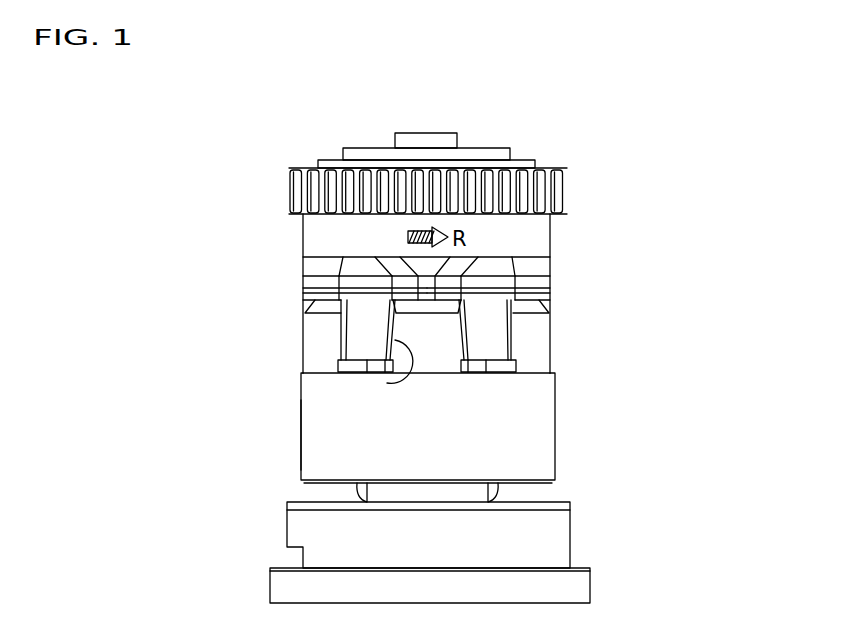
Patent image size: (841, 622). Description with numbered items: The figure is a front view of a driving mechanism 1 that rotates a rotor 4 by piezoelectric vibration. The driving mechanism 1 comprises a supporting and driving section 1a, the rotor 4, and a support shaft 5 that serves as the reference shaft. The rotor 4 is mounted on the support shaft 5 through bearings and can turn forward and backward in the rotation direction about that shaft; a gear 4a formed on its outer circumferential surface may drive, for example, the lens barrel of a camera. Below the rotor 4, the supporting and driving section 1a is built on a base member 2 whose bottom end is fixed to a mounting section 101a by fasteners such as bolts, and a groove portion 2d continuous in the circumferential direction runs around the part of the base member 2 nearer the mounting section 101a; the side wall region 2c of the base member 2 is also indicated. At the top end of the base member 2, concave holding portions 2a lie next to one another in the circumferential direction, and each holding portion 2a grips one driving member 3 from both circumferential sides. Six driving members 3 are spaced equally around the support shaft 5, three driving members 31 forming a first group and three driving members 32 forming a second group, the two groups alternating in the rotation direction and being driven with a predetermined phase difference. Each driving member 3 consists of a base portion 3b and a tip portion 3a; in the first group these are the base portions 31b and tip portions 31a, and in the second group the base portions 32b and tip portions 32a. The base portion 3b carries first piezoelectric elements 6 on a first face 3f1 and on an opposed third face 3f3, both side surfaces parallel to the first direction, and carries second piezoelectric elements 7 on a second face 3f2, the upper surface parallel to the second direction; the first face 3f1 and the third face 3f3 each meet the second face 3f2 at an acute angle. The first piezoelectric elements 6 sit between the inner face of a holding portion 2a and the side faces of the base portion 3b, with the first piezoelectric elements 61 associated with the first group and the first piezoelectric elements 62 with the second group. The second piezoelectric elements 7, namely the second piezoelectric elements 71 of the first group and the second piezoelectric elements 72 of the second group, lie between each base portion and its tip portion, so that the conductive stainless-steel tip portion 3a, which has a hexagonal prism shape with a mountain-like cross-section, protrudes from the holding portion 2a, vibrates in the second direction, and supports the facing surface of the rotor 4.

The driving mechanism 1 is at (475, 226).
The supporting and driving section 1a is at (565, 319).
The base member 2 is at (417, 430).
The holding portion 2a is at (353, 360).
The housing side wall 2c is at (301, 432).
The groove portion 2d is at (296, 495).
The driving member 3 is at (427, 249).
The driving member of the first group 31 is at (160, 199).
The driving member of the second group 32 is at (690, 186).
The tip portion 3a is at (425, 235).
The tip portion of the first-group driving member 31a is at (367, 271).
The tip portion of the second-group driving member 32a is at (493, 272).
The base portion 3b is at (425, 269).
The base portion of the first-group driving member 31b is at (363, 306).
The base portion of the second-group driving member 32b is at (490, 306).
The first face 3f1 is at (345, 334).
The second face 3f2 is at (338, 272).
The third face 3f3 is at (387, 383).
The rotor 4 is at (377, 154).
The gear 4a is at (290, 192).
The support shaft 5 is at (442, 123).
The first piezoelectric element 6 is at (427, 330).
The first piezoelectric element of the first group 61 is at (338, 320).
The first piezoelectric element of the second group 62 is at (515, 337).
The second piezoelectric element 7 is at (424, 281).
The second piezoelectric element of the first group 71 is at (335, 292).
The second piezoelectric element of the second group 72 is at (538, 293).
The mounting section 101a is at (578, 588).